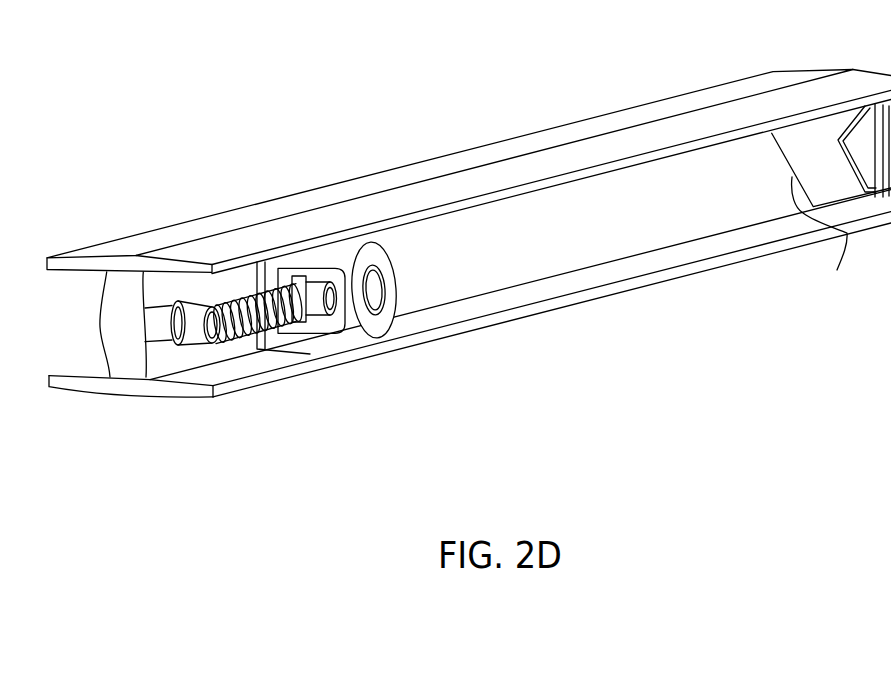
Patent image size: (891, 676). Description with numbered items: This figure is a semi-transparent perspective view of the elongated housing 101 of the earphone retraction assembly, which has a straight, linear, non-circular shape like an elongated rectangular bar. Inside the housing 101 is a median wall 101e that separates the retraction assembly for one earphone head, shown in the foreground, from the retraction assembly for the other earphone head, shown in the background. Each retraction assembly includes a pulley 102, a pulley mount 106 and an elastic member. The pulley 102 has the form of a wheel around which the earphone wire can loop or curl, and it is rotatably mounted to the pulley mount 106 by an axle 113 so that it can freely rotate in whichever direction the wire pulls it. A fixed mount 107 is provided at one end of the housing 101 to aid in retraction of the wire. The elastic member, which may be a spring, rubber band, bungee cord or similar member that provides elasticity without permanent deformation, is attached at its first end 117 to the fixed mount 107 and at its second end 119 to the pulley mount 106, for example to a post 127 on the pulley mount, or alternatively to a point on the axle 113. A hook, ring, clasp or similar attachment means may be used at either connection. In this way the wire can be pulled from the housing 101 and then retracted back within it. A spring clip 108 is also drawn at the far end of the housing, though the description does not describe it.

The housing 101 is at (241, 139).
The median wall 101e is at (122, 290).
The pulley 102 is at (377, 252).
The pulley mount 106 is at (346, 334).
The fixed mount 107 is at (194, 330).
The spring clip 108 is at (862, 158).
The axle 113 is at (375, 288).
The first end 117 is at (220, 332).
The second end 119 is at (297, 335).
The post 127 is at (345, 333).